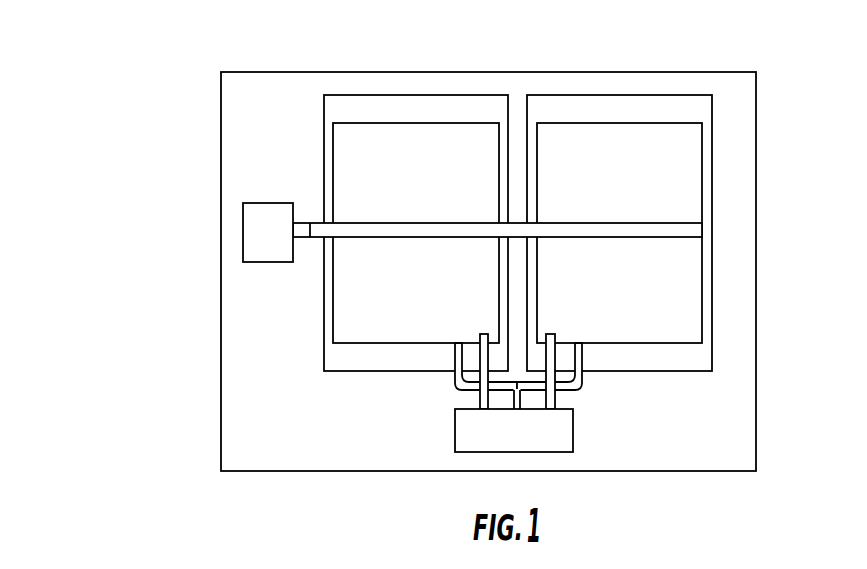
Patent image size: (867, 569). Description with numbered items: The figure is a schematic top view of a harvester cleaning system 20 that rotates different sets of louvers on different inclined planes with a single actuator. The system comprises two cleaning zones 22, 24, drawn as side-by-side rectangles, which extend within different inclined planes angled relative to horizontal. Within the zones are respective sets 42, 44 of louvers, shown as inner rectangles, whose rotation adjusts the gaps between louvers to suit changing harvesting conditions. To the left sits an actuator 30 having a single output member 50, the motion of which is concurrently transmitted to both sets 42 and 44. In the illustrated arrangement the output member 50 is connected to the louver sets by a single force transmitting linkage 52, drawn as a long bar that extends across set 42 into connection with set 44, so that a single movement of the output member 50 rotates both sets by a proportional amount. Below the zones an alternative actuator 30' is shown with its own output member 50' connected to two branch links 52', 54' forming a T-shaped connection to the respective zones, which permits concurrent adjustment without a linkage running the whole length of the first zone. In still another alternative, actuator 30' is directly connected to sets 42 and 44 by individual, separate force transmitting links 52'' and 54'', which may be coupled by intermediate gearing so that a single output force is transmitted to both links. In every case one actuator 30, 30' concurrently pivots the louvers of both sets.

The harvester cleaning system 20 is at (91, 94).
The cleaning zone 22 is at (387, 95).
The cleaning zone 24 is at (620, 95).
The set of louvers 42 is at (468, 123).
The set of louvers 44 is at (687, 123).
The actuator 30 is at (235, 216).
The output member 50 is at (287, 270).
The force transmitting linkage 52 is at (547, 208).
The branch link 52' is at (441, 377).
The branch link 54' is at (604, 377).
The output member 50' is at (470, 405).
The force transmitting link 52'' is at (464, 352).
The force transmitting link 54'' is at (581, 352).
The actuator 30' is at (558, 436).